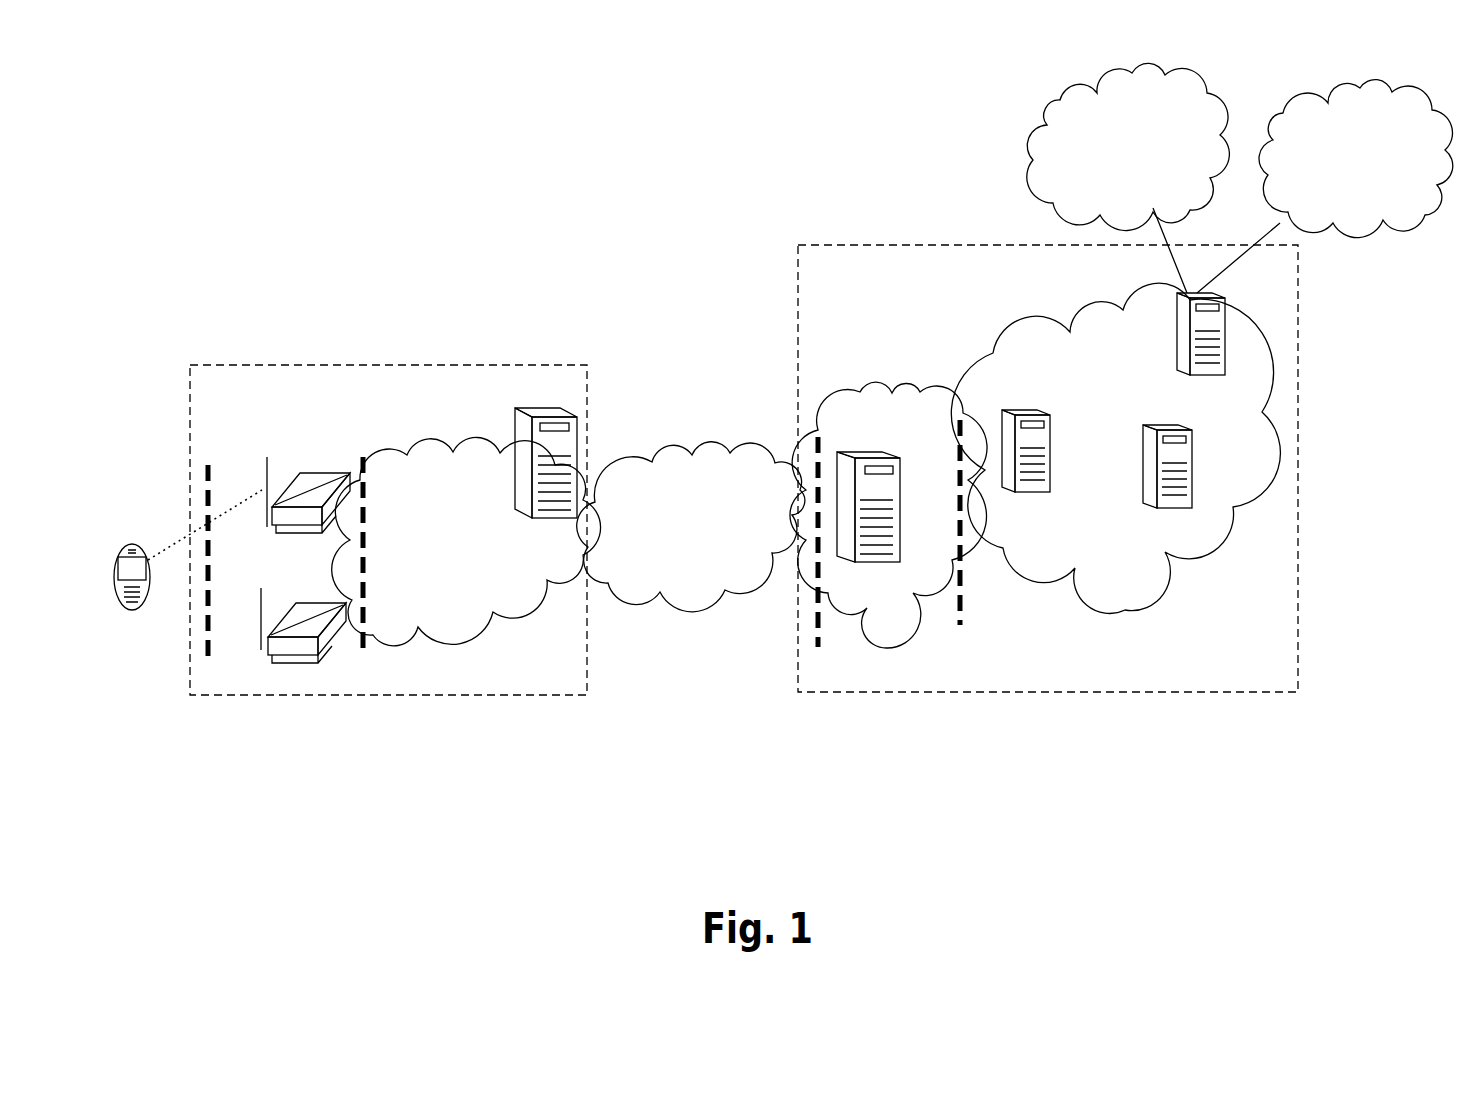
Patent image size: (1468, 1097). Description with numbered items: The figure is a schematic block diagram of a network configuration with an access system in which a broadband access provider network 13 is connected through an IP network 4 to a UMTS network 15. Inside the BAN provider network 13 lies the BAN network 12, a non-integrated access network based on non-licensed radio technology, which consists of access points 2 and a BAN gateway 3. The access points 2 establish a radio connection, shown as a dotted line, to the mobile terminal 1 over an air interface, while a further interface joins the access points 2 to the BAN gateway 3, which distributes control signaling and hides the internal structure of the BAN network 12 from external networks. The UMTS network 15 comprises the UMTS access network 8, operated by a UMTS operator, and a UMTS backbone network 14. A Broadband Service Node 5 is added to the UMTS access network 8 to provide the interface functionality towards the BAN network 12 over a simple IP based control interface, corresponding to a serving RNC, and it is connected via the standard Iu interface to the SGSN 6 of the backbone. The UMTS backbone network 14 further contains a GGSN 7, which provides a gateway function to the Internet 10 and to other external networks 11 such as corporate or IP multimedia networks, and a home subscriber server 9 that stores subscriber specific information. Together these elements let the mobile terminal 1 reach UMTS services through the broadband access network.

The mobile terminal 1 is at (125, 548).
The access point 2 is at (338, 518).
The BAN gateway 3 is at (563, 410).
The IP network 4 is at (753, 600).
The Broadband Service Node 5 is at (850, 452).
The SGSN 6 is at (1017, 410).
The GGSN 7 is at (1227, 317).
The UMTS access network 8 is at (887, 648).
The home subscriber server 9 is at (1195, 505).
The Internet 10 is at (1383, 220).
The external networks 11 is at (1045, 118).
The BAN network 12 is at (418, 455).
The BAN provider network 13 is at (490, 697).
The UMTS backbone network 14 is at (1128, 610).
The UMTS network 15 is at (1007, 692).